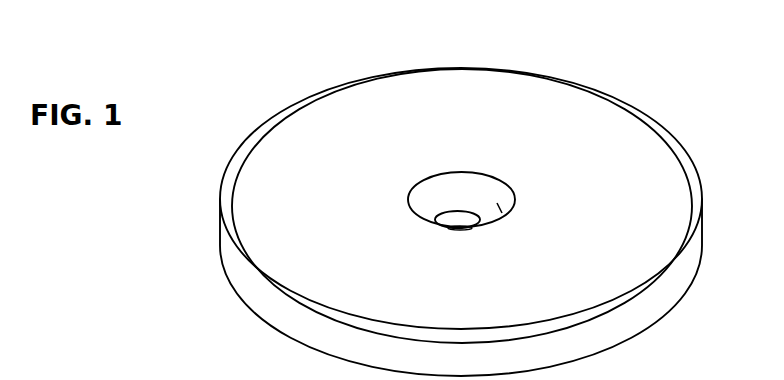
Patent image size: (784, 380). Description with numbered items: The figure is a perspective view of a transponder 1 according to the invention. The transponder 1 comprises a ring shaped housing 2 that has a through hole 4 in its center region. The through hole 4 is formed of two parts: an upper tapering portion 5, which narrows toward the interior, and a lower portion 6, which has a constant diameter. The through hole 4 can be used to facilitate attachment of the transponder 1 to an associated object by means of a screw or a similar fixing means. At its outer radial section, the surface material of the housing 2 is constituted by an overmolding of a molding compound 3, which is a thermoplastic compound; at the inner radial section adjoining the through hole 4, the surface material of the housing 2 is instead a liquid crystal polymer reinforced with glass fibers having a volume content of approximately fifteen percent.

The transponder 1 is at (105, 195).
The ring shaped housing 2 is at (172, 252).
The molding compound overmolding 3 is at (297, 265).
The through hole 4 is at (459, 192).
The upper tapering portion 5 is at (497, 203).
The lower portion 6 is at (475, 215).